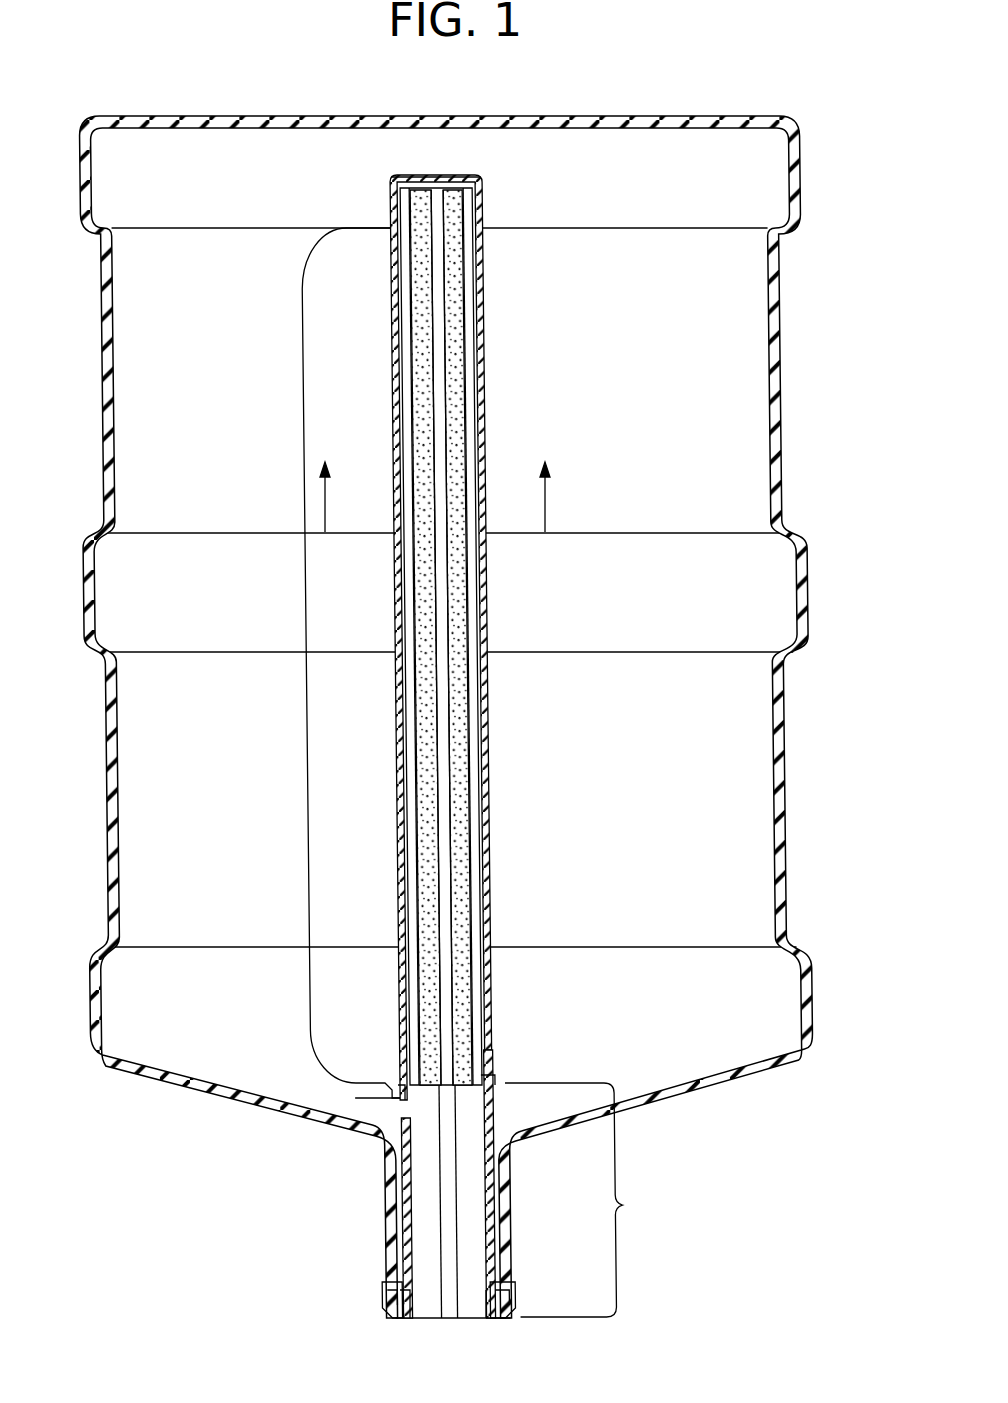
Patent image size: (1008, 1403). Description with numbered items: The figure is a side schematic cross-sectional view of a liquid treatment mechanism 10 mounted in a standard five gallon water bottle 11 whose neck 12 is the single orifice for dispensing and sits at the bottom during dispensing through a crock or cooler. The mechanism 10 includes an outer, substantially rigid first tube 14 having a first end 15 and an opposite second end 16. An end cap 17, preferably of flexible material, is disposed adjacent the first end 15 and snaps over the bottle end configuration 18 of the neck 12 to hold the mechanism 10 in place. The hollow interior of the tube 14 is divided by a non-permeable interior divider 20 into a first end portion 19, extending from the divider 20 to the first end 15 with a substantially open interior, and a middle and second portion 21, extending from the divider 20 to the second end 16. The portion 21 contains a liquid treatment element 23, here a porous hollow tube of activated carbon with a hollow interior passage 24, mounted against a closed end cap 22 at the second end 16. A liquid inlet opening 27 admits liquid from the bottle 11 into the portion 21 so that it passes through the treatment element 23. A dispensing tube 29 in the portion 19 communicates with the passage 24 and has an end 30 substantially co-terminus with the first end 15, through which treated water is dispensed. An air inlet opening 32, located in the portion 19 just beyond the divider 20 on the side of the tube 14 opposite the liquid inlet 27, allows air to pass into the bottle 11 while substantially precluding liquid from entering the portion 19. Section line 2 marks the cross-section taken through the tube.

The liquid treatment mechanism 10 is at (476, 721).
The water bottle 11 is at (786, 422).
The neck 12 is at (505, 1205).
The first tube 14 is at (490, 765).
The first end 15 is at (480, 1305).
The second end 16 is at (393, 178).
The end cap 17 is at (512, 1287).
The bottle end configuration 18 is at (390, 1273).
The first end portion 19 is at (585, 1200).
The interior divider 20 is at (400, 1052).
The middle and second portion 21 is at (302, 601).
The closed end cap 22 is at (450, 187).
The liquid treatment element 23 is at (472, 208).
The hollow interior passage 24 is at (455, 962).
The opening 27 is at (489, 1060).
The dispensing tube 29 is at (447, 1268).
The end 30 is at (472, 1302).
The air inlet opening 32 is at (370, 1092).
The section line 2- 2 is at (433, 479).